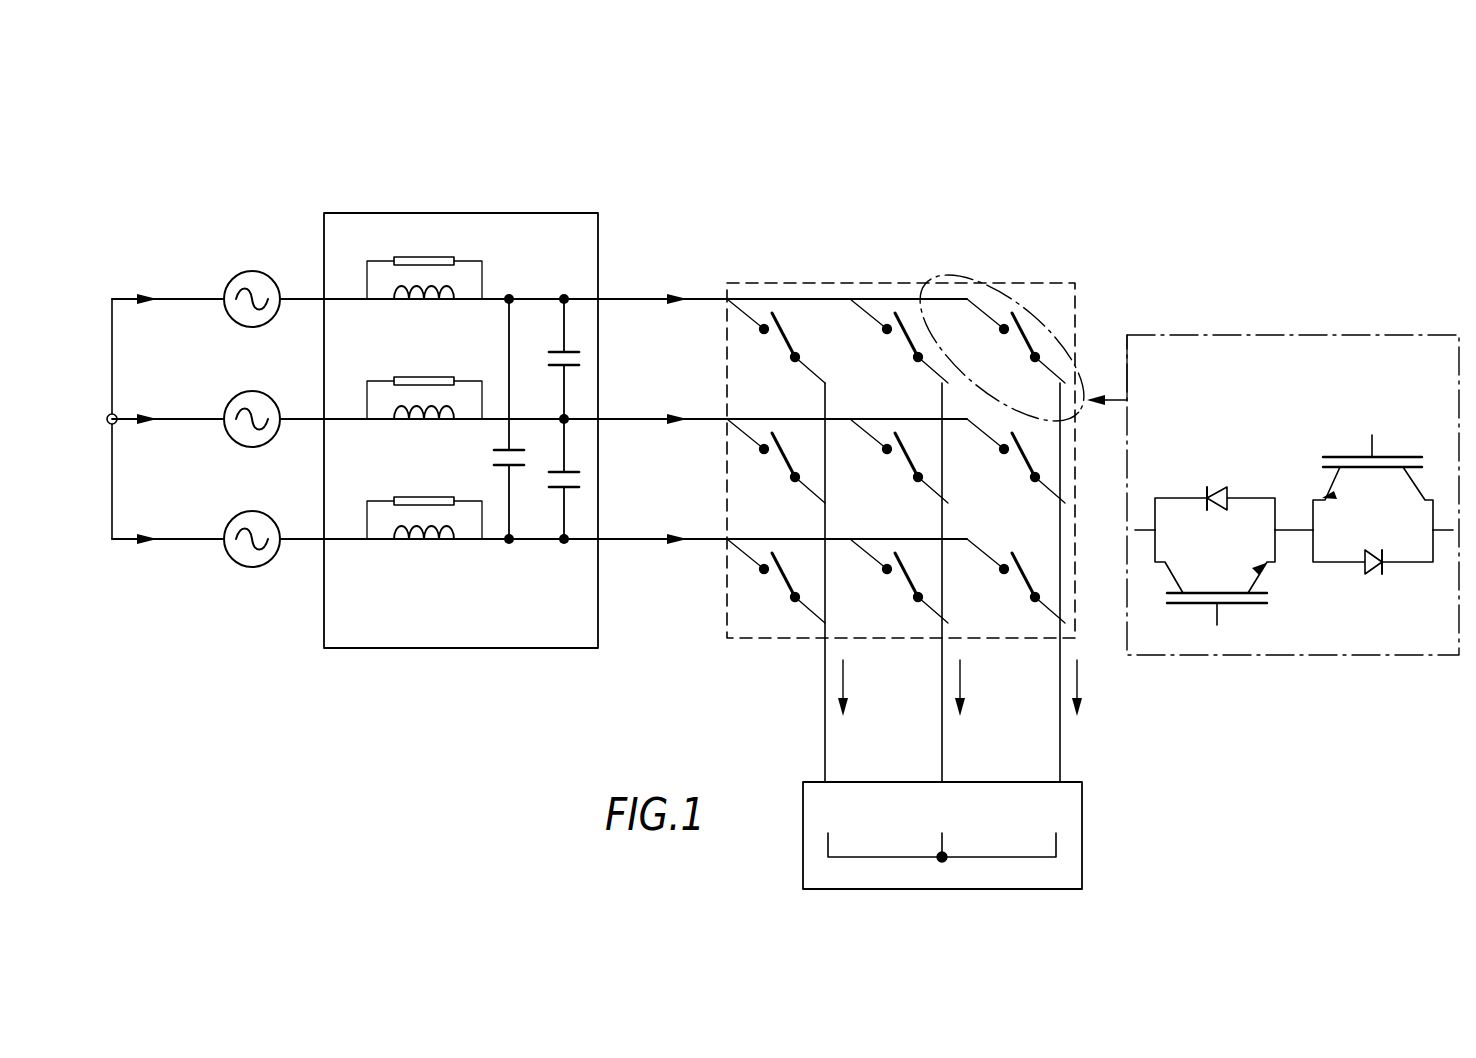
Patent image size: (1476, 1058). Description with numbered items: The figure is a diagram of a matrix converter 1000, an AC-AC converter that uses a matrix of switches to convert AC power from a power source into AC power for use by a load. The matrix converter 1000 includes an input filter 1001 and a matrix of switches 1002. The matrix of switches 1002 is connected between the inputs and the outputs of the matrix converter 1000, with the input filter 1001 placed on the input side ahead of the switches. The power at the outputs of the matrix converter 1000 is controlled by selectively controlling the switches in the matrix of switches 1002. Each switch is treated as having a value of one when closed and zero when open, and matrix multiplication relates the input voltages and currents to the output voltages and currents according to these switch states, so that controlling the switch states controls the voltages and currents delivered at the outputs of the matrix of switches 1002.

The matrix converter 1000 is at (296, 171).
The input filter 1001 is at (500, 207).
The matrix of switches 1002 is at (870, 277).